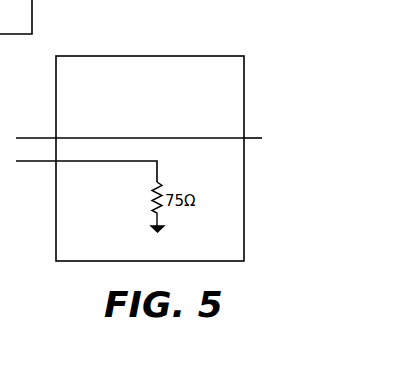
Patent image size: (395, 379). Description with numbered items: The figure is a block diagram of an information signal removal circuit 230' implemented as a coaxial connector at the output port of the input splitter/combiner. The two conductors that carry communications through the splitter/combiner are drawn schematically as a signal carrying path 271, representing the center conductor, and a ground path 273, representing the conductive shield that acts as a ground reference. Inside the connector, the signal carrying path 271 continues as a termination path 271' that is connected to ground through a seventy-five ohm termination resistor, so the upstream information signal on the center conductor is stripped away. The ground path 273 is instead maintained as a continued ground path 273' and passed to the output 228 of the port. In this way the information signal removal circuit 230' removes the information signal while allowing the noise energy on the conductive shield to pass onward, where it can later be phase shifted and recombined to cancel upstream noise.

The information signal removal circuit 230' is at (150, 140).
The ground path 273 is at (36, 130).
The ground path 273' is at (150, 130).
The output 228 is at (262, 130).
The signal carrying path 271 is at (36, 170).
The termination path 271' is at (106, 171).